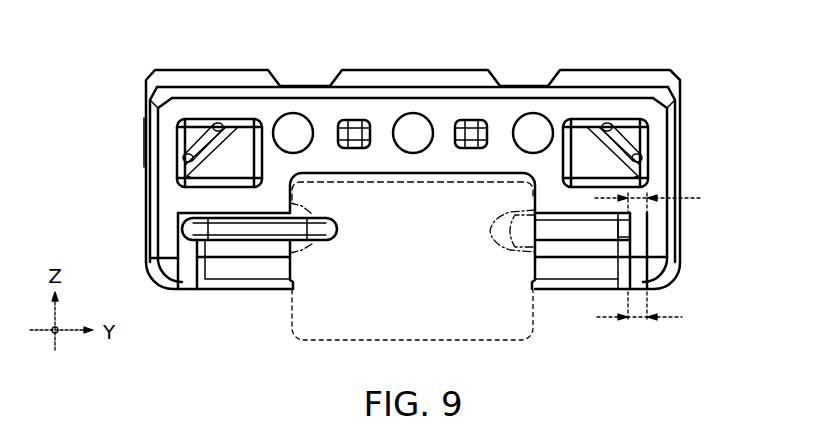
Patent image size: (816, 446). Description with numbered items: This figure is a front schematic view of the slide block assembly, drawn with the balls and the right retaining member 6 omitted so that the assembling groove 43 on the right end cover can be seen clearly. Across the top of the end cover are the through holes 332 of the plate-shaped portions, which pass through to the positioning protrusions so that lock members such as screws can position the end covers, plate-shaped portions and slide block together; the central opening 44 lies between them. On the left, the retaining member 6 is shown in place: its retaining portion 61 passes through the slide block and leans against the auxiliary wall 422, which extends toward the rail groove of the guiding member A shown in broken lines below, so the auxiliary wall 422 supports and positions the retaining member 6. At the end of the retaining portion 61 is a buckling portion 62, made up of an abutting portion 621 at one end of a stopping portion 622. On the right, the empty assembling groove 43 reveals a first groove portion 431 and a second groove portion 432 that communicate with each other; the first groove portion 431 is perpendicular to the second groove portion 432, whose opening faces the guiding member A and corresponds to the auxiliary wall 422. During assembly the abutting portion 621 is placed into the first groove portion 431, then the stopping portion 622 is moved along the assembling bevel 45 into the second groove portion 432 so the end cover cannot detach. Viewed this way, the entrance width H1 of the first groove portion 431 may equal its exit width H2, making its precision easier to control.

The through hole 332 is at (297, 113).
The central hole 44 is at (413, 113).
The retaining member 6 is at (318, 210).
The retaining portion 61 is at (337, 229).
The buckling portion 62 is at (176, 218).
The abutting portion 621 is at (190, 228).
The stopping portion 622 is at (227, 230).
The auxiliary wall 422 is at (518, 232).
The assembling groove 43 is at (665, 251).
The first groove portion 431 is at (640, 231).
The second groove portion 432 is at (603, 230).
The assembling bevel 45 is at (563, 268).
The guiding member A is at (292, 329).
The entrance width H1 is at (639, 319).
The exit width H2 is at (666, 199).